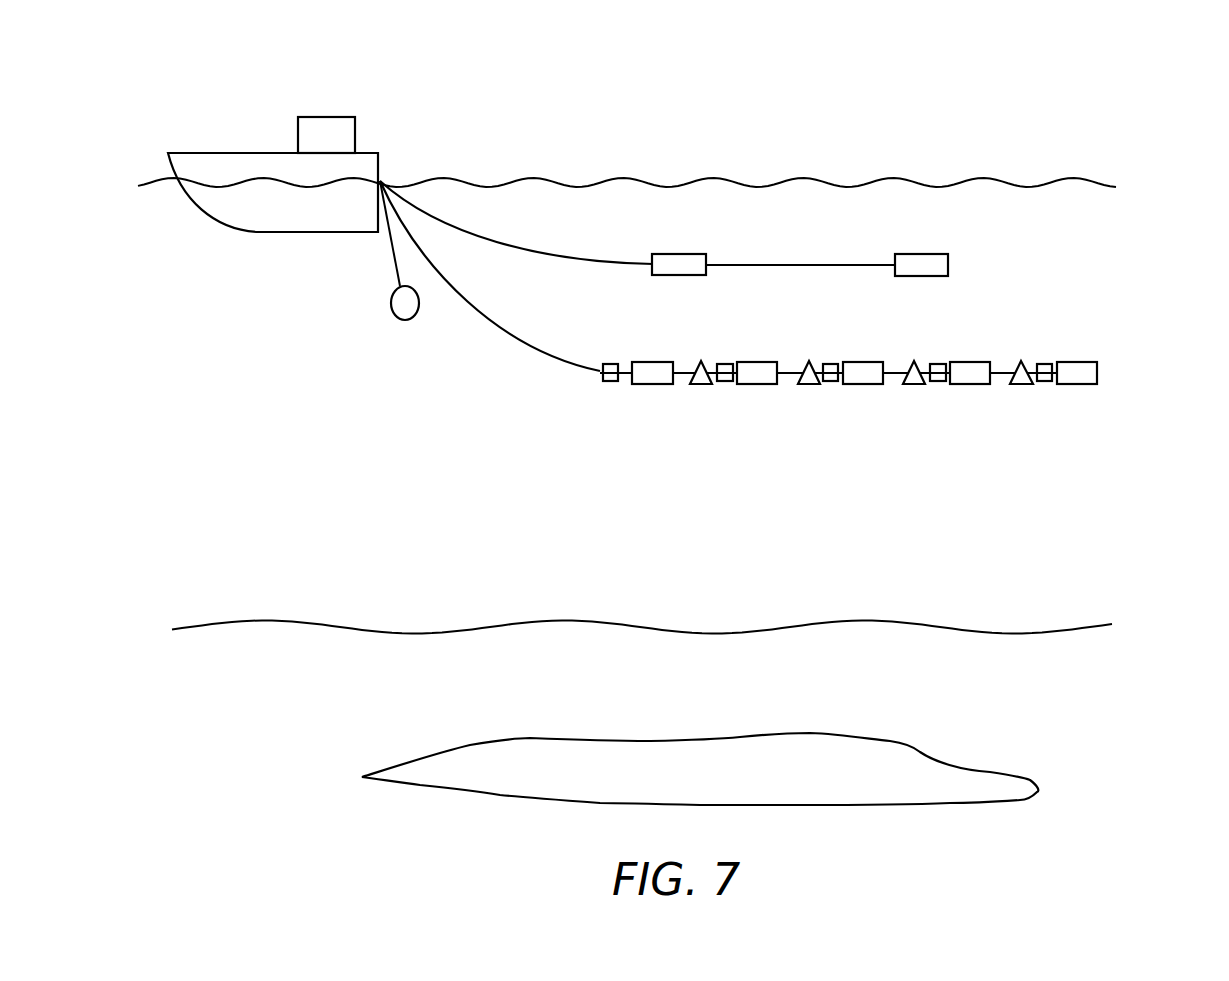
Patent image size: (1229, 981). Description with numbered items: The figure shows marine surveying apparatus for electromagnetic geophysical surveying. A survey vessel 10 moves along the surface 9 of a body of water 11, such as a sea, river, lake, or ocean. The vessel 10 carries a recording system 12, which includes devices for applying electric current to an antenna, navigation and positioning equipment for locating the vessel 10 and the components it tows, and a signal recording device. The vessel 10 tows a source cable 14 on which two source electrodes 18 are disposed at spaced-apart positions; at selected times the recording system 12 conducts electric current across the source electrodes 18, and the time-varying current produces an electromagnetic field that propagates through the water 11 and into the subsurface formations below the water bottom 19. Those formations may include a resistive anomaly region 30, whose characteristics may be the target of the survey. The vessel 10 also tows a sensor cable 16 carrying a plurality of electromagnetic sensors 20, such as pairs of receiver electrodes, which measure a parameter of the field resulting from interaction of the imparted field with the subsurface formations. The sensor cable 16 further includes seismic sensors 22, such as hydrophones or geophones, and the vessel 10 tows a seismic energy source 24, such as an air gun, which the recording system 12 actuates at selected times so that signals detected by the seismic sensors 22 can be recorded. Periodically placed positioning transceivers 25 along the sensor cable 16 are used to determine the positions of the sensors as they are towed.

The surface 9 is at (1030, 188).
The survey vessel 10 is at (222, 152).
The body of water 11 is at (270, 401).
The recording system 12 is at (326, 117).
The source cable 14 is at (543, 250).
The sensor cable 16 is at (497, 323).
The source electrodes 18 is at (678, 277).
The water bottom 19 is at (443, 628).
The electromagnetic sensors 20 is at (652, 386).
The seismic sensors 22 is at (701, 386).
The seismic energy source 24 is at (405, 320).
The positioning transceivers 25 is at (610, 386).
The resistive anomaly region 30 is at (700, 769).